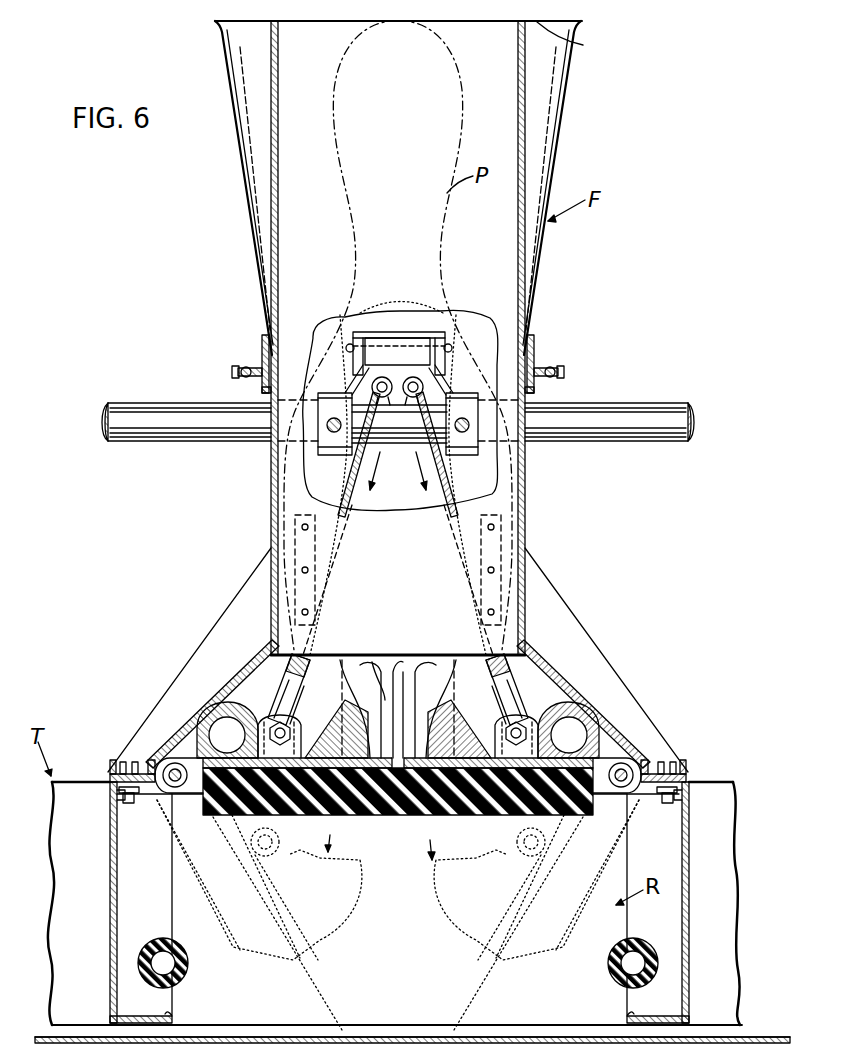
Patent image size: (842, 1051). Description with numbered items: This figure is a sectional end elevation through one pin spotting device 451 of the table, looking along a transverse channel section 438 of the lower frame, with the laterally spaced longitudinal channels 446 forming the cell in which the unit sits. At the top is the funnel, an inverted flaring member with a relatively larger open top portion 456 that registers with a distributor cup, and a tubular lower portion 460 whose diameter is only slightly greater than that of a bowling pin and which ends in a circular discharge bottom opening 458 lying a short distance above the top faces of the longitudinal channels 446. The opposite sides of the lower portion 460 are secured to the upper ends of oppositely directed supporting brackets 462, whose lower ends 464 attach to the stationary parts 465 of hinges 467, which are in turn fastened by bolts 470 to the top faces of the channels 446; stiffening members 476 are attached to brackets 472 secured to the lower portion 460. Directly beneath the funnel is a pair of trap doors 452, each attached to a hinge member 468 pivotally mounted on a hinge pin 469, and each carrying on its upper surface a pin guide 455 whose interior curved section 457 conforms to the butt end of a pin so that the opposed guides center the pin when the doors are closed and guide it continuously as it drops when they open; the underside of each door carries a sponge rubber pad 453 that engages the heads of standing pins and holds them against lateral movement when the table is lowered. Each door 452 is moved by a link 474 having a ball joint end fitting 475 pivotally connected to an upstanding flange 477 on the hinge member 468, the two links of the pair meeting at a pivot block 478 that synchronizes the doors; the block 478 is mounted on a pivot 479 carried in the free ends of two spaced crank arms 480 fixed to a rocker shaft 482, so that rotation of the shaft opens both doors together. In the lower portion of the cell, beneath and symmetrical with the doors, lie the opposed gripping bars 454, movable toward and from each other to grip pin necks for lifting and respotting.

The transverse channel section 438 is at (62, 876).
The longitudinal channel 446 is at (112, 898).
The pin spotting device 451 is at (250, 197).
The trap door 452 is at (354, 758).
The sponge rubber pad 453 is at (395, 818).
The gripping bar 454 is at (176, 988).
The pin guide 455 is at (334, 683).
The open top portion 456 is at (579, 40).
The interior curved section 457 is at (362, 690).
The discharge bottom opening 458 is at (383, 655).
The tubular lower portion 460 is at (270, 476).
The supporting bracket 462 is at (243, 589).
The lower end of bracket 464 is at (110, 775).
The stationary hinge part 465 is at (128, 803).
The hinge 467 is at (184, 795).
The hinge member 468 is at (214, 698).
The hinge pin 469 is at (168, 765).
The bolt 470 is at (112, 814).
The bracket 472 is at (258, 384).
The link 474 is at (445, 502).
The ball joint end fitting 475 is at (286, 670).
The stiffening member 476 is at (262, 345).
The upstanding flange 477 is at (277, 717).
The pivot block 478 is at (375, 313).
The pivot 479 is at (480, 378).
The crank arm 480 is at (445, 340).
The rocker shaft 482 is at (140, 420).